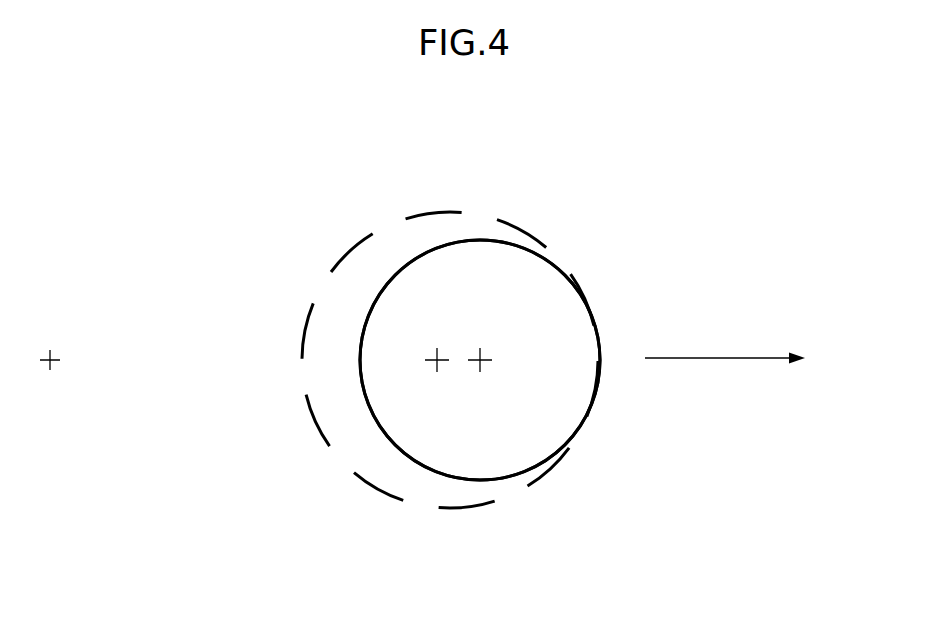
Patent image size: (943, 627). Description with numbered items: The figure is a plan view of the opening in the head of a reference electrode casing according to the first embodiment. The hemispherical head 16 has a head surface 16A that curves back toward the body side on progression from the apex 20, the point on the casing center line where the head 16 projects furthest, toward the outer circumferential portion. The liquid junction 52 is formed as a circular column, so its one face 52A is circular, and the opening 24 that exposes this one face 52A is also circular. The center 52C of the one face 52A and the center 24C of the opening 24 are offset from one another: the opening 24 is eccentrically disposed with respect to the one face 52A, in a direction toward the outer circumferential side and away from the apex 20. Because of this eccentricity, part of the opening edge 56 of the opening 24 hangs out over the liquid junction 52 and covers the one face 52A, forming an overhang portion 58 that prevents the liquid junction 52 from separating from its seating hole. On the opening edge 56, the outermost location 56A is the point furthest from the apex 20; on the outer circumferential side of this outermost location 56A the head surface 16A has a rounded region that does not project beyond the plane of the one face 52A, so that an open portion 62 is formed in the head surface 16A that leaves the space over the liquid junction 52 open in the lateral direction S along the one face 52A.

The head 16 is at (513, 171).
The head surface 16A is at (537, 527).
The apex 20 is at (50, 360).
The opening 24 is at (513, 241).
The center of the opening 24C is at (480, 358).
The liquid junction 52 is at (427, 211).
The one face of the liquid junction 52A is at (525, 432).
The center of the one face 52C is at (437, 358).
The opening edge 56 is at (332, 387).
The outermost location 56A is at (600, 357).
The overhang portion 58 is at (353, 433).
The open portion 62 is at (679, 415).
The lateral direction S is at (756, 358).